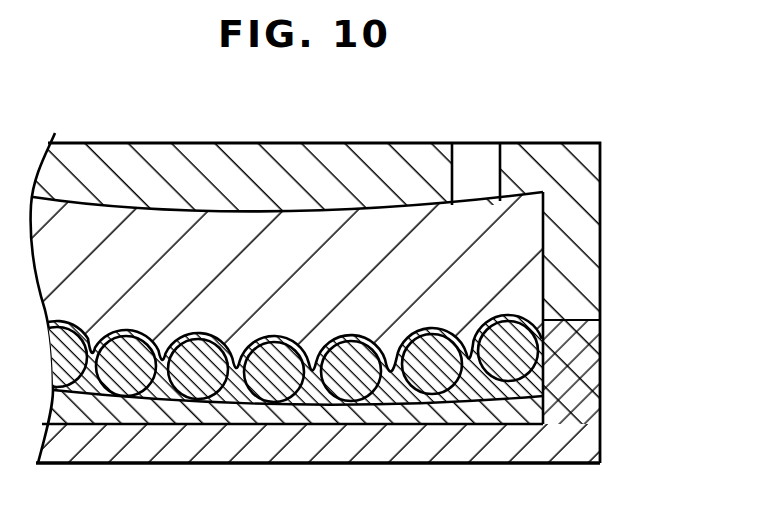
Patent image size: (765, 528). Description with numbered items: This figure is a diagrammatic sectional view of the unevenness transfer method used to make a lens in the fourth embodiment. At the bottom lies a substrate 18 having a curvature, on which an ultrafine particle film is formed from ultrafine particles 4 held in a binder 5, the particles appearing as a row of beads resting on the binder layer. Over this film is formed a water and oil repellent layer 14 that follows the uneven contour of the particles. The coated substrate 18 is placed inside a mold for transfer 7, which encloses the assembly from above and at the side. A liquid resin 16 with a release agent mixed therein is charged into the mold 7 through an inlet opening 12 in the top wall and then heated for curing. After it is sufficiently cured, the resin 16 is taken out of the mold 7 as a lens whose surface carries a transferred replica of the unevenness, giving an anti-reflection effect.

The mold for transfer 7 is at (583, 173).
The inlet opening 12 is at (476, 150).
The liquid resin 16 is at (530, 231).
The water and oil repellent layer 14 is at (545, 320).
The ultrafine particles 4 is at (527, 357).
The binder 5 is at (527, 398).
The substrate 18 is at (532, 413).